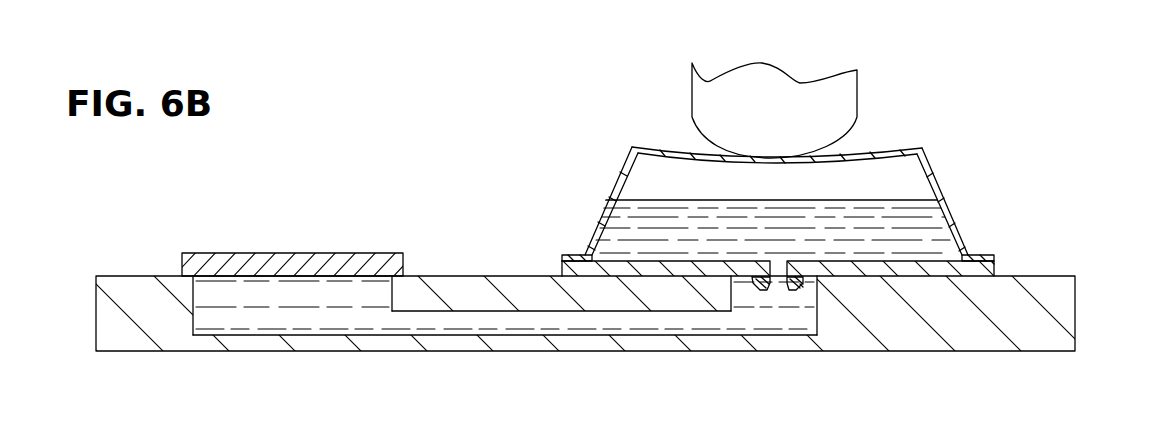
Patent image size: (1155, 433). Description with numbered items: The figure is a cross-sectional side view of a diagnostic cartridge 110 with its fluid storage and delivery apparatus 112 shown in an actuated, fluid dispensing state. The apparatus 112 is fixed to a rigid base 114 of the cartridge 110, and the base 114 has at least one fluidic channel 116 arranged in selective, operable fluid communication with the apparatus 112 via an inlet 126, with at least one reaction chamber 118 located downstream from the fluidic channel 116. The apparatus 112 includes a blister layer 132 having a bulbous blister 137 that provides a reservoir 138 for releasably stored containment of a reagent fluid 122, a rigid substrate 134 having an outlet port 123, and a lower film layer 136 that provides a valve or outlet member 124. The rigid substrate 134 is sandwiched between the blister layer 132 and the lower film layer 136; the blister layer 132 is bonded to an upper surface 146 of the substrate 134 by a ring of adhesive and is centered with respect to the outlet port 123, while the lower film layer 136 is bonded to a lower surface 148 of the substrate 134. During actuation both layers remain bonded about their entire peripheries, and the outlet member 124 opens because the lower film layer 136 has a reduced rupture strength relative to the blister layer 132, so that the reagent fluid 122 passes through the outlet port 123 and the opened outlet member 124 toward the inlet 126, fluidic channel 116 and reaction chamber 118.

The diagnostic cartridge 110 is at (389, 218).
The fluid storage and delivery apparatus 112 is at (959, 139).
The rigid base 114 is at (1077, 318).
The fluidic channel 116 is at (562, 331).
The reaction chamber 118 is at (262, 329).
The reagent fluid 122 is at (932, 211).
The outlet port 123 is at (773, 267).
The outlet member 124 is at (790, 291).
The inlet 126 is at (794, 319).
The blister layer 132 is at (981, 253).
The rigid substrate 134 is at (995, 266).
The lower film layer 136 is at (800, 289).
The bulbous blister 137 is at (880, 149).
The reservoir 138 is at (897, 172).
The upper surface 146 is at (620, 259).
The lower surface 148 is at (582, 278).